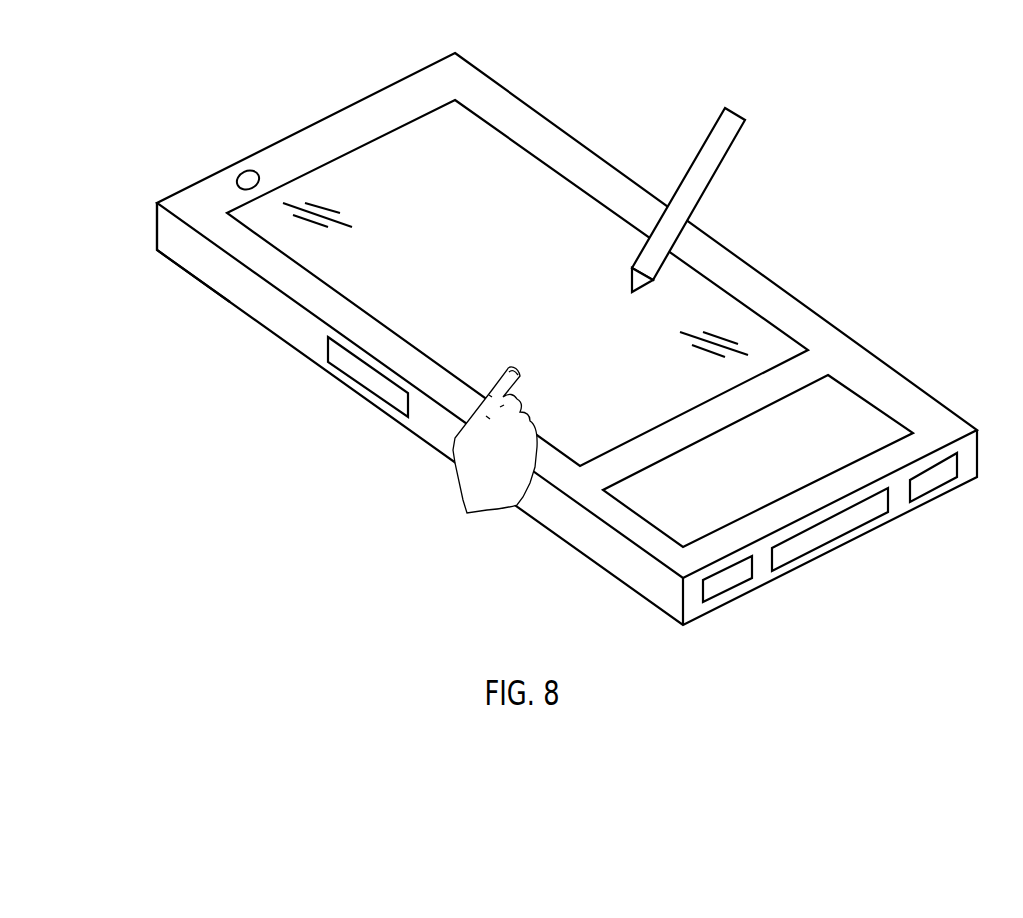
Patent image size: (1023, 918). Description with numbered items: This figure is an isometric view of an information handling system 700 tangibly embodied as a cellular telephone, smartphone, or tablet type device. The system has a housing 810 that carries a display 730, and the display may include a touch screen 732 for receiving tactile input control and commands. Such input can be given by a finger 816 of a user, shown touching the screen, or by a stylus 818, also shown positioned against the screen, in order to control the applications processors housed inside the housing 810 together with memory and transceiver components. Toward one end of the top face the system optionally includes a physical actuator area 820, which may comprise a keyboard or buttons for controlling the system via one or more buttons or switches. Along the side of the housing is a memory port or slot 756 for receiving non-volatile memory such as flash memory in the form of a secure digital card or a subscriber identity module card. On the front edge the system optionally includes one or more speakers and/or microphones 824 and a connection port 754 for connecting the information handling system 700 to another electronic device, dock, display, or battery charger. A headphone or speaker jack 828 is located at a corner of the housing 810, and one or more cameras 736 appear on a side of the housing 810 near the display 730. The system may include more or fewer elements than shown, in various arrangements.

The information handling system 700 is at (557, 343).
The display 730 is at (455, 161).
The touch screen 732 is at (545, 287).
The camera 736 is at (243, 171).
The connection port 754 is at (847, 535).
The memory port or slot 756 is at (347, 372).
The housing 810 is at (398, 81).
The finger 816 is at (508, 370).
The stylus 818 is at (707, 140).
The physical actuator area 820 is at (842, 418).
The speakers and/or microphones 824 is at (733, 590).
The headphone or speaker jack 828 is at (180, 190).